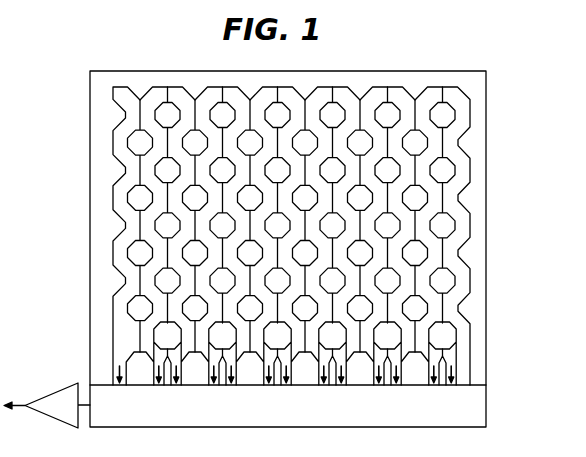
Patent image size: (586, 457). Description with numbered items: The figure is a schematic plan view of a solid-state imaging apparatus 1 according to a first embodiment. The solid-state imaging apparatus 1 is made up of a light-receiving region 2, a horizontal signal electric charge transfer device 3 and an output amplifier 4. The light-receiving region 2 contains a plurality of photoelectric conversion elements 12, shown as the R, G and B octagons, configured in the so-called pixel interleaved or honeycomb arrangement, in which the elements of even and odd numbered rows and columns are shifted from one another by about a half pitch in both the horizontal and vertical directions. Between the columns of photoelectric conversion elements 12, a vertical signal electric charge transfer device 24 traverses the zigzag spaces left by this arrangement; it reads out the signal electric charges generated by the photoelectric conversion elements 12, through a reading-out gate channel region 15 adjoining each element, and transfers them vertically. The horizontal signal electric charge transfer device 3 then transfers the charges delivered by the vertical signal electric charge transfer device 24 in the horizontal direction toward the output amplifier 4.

The solid-state imaging apparatus 1 is at (497, 426).
The light-receiving region 2 is at (92, 380).
The horizontal signal electric charge transfer device 3 is at (454, 423).
The output amplifier 4 is at (60, 418).
The photoelectric conversion element 12 is at (303, 97).
The reading-out gate channel region 15 is at (459, 177).
The vertical signal electric charge transfer device 24 is at (168, 85).